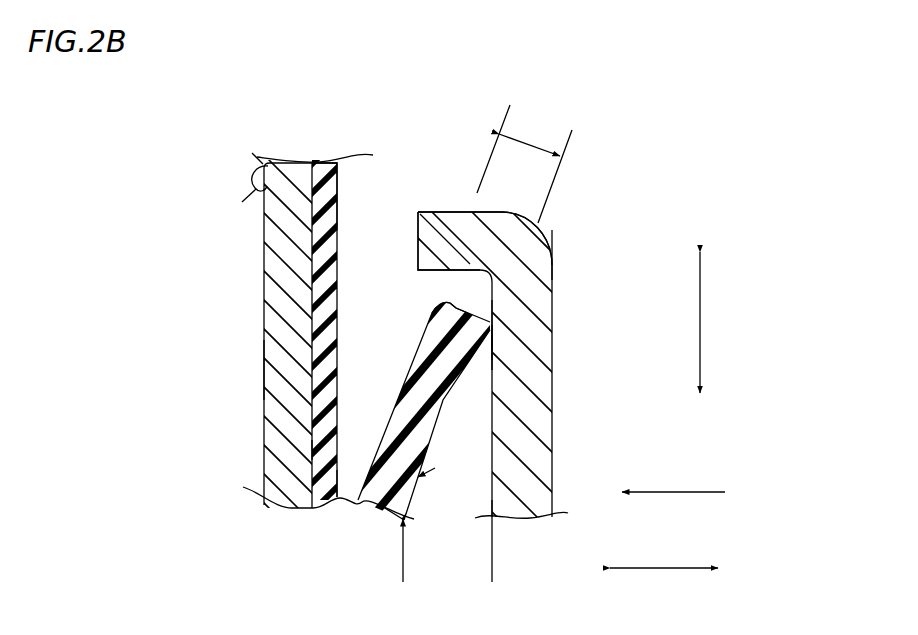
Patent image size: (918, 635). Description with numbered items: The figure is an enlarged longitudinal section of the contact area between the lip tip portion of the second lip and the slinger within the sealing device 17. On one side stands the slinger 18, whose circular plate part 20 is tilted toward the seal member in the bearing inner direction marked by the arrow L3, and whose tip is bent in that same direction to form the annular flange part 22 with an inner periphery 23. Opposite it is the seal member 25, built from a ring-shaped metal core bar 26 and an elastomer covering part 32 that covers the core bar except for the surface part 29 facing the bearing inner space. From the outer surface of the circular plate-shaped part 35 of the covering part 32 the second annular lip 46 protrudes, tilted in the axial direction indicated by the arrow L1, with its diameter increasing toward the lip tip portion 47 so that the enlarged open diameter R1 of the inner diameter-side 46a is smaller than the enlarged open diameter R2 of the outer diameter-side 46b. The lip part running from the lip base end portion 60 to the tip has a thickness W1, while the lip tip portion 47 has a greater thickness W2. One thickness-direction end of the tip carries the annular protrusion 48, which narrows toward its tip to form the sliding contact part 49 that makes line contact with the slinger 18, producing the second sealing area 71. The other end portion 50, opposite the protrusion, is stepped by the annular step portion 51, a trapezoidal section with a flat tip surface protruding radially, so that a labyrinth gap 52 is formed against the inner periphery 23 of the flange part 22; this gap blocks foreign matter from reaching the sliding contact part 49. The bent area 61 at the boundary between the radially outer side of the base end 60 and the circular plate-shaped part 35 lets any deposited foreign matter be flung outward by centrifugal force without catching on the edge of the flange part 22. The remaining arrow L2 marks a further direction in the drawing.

The sealing device 17 is at (577, 325).
The slinger 18 is at (497, 345).
The circular plate part 20 is at (497, 340).
The annular flange part 22 is at (468, 222).
The inner periphery of the flange part 23 is at (502, 218).
The seal member 25 is at (258, 158).
The core bar 26 is at (264, 410).
The surface part 29 is at (264, 372).
The covering part 32 is at (320, 165).
The circular plate-shaped part 35 is at (340, 212).
The second annular lip 46 is at (407, 367).
The inner diameter-side of the second lip 46a is at (405, 498).
The outer diameter-side of the second lip 46b is at (554, 240).
The lip tip portion 47 is at (497, 326).
The annular protrusion 48 is at (497, 336).
The sliding contact part 49 is at (497, 333).
The other end portion 50 is at (436, 318).
The annular step portion 51 is at (432, 306).
The labyrinth gap 52 is at (438, 213).
The lip base end portion 60 is at (313, 450).
The bent area 61 is at (353, 485).
The second sealing area 71 is at (497, 331).
The thickness of the lip part W1 is at (444, 470).
The thickness of the lip tip portion W2 is at (524, 164).
The enlarged open diameter of the inner diameter-side R1 is at (419, 550).
The enlarged open diameter of the outer diameter-side R2 is at (508, 541).
The axial direction arrow L1 is at (664, 549).
The direction arrow L2 is at (718, 322).
The bearing inner direction arrow L3 is at (673, 476).